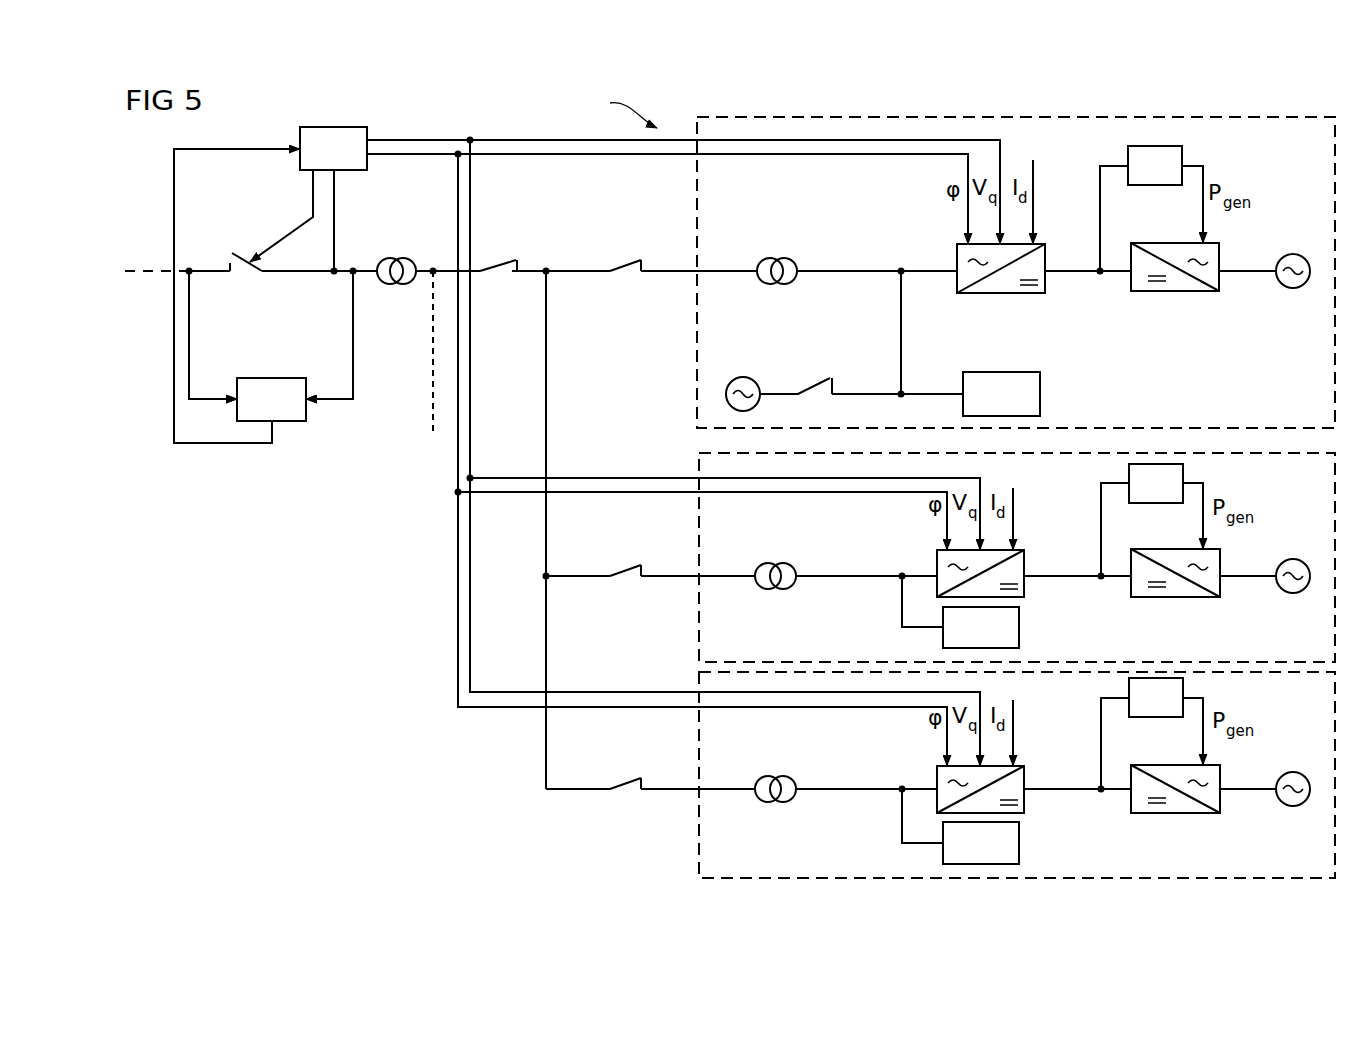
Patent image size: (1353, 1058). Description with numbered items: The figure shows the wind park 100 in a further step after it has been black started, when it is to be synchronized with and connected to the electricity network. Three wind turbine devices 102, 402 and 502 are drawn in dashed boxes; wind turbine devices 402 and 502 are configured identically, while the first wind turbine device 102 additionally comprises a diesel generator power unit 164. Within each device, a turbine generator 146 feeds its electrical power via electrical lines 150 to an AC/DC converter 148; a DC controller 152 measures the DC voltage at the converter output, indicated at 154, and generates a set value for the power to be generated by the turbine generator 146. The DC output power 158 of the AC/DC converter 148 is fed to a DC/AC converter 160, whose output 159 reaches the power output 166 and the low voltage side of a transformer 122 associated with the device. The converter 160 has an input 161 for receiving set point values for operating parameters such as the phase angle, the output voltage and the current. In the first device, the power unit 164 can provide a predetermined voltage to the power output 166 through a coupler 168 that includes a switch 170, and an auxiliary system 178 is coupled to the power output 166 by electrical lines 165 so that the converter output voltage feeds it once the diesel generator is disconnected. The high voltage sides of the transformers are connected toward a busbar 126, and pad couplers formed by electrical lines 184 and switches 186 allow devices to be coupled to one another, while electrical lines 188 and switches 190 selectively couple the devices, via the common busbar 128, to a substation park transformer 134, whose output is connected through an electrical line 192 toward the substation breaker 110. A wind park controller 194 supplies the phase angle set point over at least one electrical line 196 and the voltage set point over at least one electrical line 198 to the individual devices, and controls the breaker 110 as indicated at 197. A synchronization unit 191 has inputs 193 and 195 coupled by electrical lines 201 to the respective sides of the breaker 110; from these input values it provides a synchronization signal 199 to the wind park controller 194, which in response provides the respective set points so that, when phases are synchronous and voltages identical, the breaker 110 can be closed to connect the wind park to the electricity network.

The wind park 100 is at (622, 101).
The wind turbine device 102 is at (697, 342).
The circuit breaker 110 is at (246, 250).
The transformer 122 is at (770, 257).
The busbar 126 is at (548, 348).
The common busbar 128 is at (433, 420).
The substation park transformer 134 is at (400, 286).
The turbine generator 146 is at (1292, 252).
The AC/DC converter 148 is at (1176, 293).
The electrical lines 150 is at (1250, 275).
The DC controller 152 is at (1183, 150).
The DC voltage measurement 154 is at (1102, 222).
The DC output power 158 is at (1070, 275).
The AC connection 159 is at (860, 265).
The DC/AC converter 160 is at (1006, 295).
The input 161 is at (1046, 246).
The power unit 164 is at (742, 377).
The electrical lines 165 is at (935, 392).
The power output 166 is at (957, 262).
The coupler 168 is at (862, 392).
The switch 170 is at (808, 380).
The auxiliary system 178 is at (1041, 394).
The electrical lines 184 is at (672, 265).
The switches 186 is at (626, 262).
The electrical lines 188 is at (432, 265).
The switches 190 is at (502, 265).
The synchronization unit 191 is at (268, 376).
The electrical line 192 is at (356, 265).
The input 193 is at (314, 396).
The wind park controller 194 is at (298, 137).
The input 195 is at (232, 396).
The electrical line 196 is at (538, 157).
The breaker control 197 is at (288, 228).
The electrical line 198 is at (546, 138).
The synchronization signal 199 is at (222, 446).
The electrical lines 201 is at (192, 313).
The wind turbine device 402 is at (699, 633).
The wind turbine device 502 is at (699, 846).